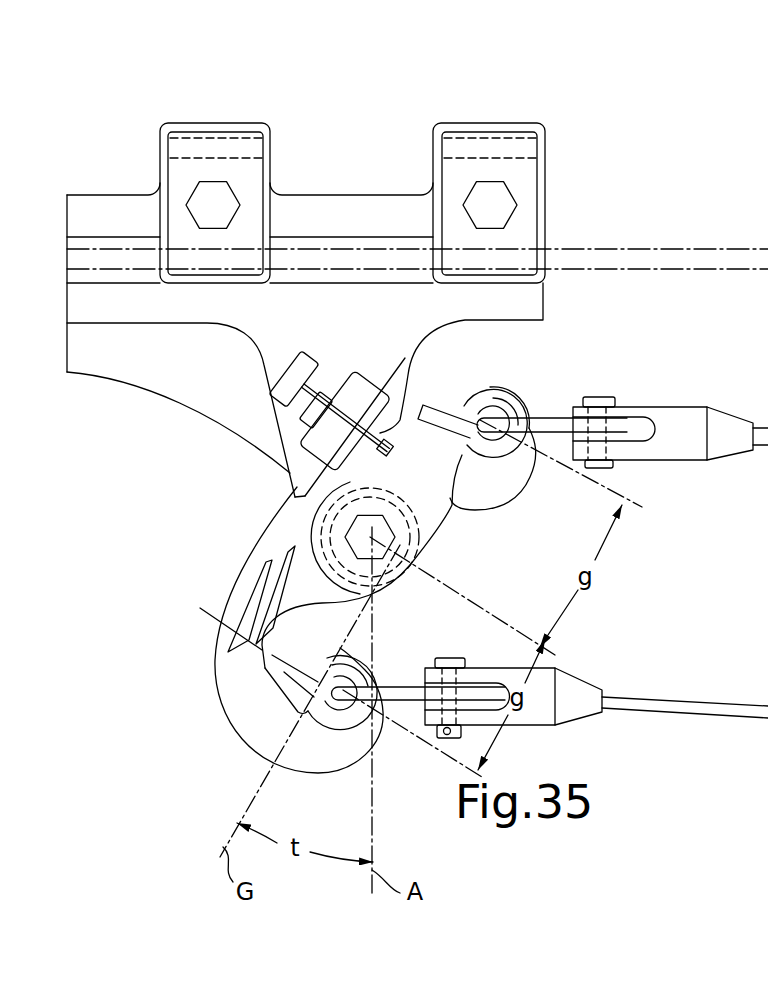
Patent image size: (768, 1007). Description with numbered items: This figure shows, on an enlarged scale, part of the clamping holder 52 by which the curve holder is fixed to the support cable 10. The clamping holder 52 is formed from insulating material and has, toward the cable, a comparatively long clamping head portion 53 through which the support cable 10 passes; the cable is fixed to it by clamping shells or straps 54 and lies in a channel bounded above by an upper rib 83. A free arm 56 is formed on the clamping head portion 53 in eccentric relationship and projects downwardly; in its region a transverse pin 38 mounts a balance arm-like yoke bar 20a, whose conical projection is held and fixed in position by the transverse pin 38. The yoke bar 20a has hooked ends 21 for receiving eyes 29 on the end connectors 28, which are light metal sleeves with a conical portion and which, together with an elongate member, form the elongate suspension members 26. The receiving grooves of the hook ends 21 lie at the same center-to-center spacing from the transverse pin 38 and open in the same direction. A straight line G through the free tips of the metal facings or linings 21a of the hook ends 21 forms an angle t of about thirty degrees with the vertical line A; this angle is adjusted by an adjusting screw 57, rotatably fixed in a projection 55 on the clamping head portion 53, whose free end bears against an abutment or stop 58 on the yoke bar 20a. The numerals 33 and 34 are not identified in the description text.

The support cable 10 is at (722, 249).
The yoke bar 20a is at (222, 725).
The hooked ends 21 is at (494, 386).
The metal facings or linings 21a is at (445, 397).
The elongate suspension members 26 is at (723, 710).
The end connectors 28 is at (678, 447).
The eyes 29 is at (575, 402).
The cable 33 is at (748, 578).
The cable 34 is at (755, 467).
The transverse pin 38 is at (420, 553).
The clamping holder 52 is at (188, 525).
The clamping head portion 53 is at (160, 378).
The clamping shells or straps 54 is at (247, 177).
The projection 55 is at (370, 392).
The free arm 56 is at (290, 490).
The adjusting screw 57 is at (313, 355).
The abutment or stop 58 is at (480, 503).
The upper rib 83 is at (363, 160).